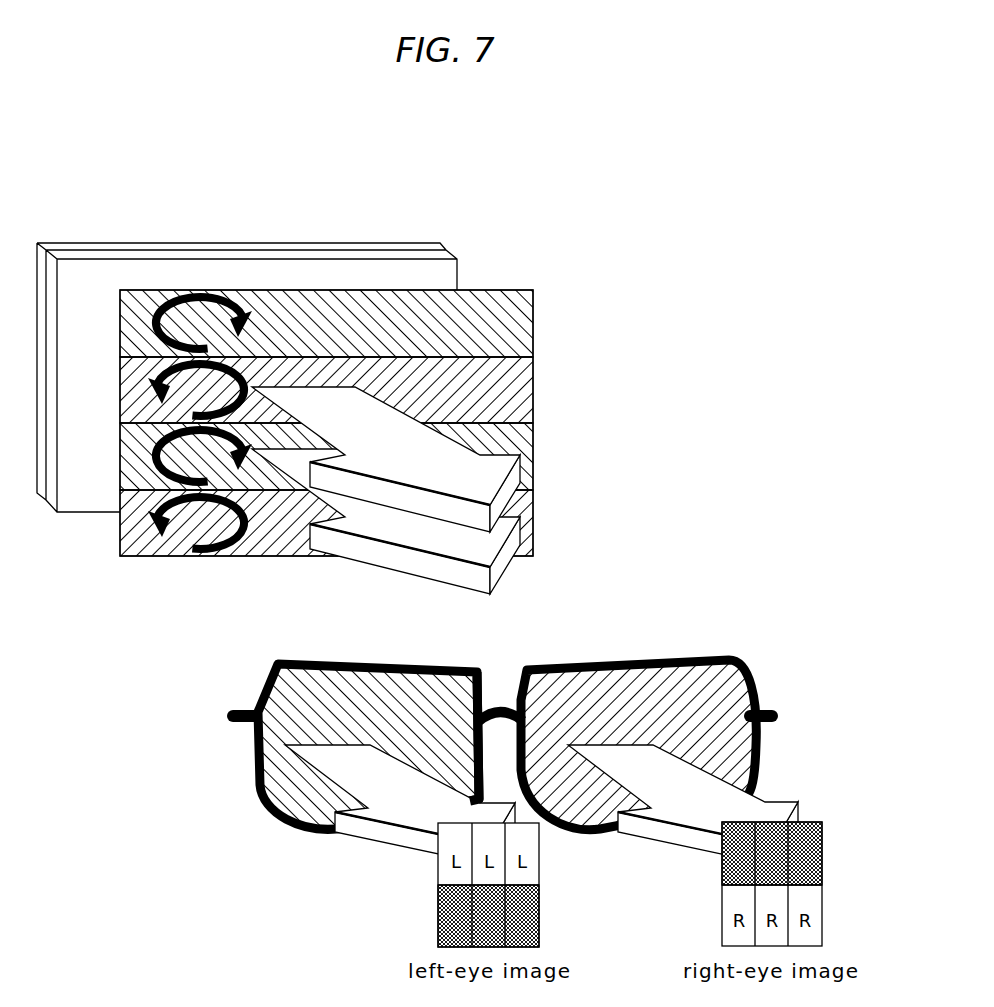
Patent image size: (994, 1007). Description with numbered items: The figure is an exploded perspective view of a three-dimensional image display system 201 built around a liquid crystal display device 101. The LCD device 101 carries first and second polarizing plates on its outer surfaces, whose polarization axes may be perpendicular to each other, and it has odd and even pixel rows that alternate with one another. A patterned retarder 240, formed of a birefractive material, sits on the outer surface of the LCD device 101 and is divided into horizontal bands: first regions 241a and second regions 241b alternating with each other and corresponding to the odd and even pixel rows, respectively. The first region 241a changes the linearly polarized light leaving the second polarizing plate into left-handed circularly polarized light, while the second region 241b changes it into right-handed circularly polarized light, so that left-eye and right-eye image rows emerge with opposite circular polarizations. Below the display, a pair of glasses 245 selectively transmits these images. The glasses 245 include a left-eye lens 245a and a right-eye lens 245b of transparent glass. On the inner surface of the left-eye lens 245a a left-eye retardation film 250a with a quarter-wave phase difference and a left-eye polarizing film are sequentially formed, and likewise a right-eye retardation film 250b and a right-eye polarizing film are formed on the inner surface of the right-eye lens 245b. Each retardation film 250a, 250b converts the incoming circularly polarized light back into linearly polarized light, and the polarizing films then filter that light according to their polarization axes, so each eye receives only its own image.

The three-dimensional image display system 201 is at (368, 159).
The liquid crystal display device 101 is at (428, 243).
The patterned retarder 240 is at (495, 290).
The first region 241a is at (500, 316).
The second region 241b is at (505, 390).
The pair of glasses 245 is at (247, 650).
The left-eye lens 245a is at (316, 677).
The right-eye lens 245b is at (646, 675).
The left-eye retardation film 250a is at (441, 666).
The right-eye retardation film 250b is at (585, 663).